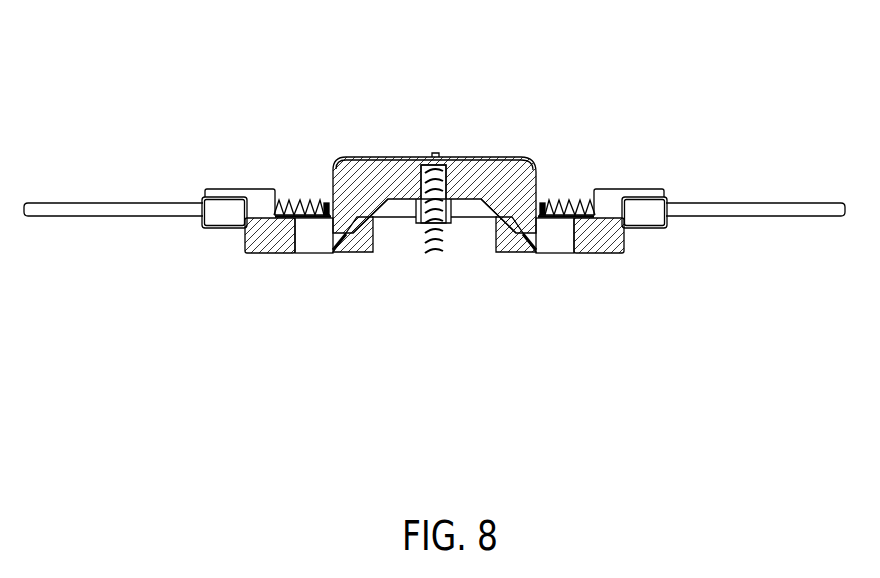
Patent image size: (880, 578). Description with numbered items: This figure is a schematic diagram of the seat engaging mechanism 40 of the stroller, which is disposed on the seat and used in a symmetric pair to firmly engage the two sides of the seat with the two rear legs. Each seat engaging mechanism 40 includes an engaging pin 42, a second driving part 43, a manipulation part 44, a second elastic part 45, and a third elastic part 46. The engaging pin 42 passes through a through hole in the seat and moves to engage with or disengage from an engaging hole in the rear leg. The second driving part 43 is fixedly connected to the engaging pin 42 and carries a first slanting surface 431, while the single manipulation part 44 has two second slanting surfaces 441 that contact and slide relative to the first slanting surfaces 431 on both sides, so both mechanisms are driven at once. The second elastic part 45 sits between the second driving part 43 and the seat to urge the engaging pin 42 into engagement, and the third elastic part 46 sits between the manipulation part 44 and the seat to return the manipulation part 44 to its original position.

The seat engaging mechanism 40 is at (170, 45).
The engaging pin 42 is at (130, 210).
The second driving part 43 is at (260, 200).
The manipulation part 44 is at (480, 173).
The second elastic part 45 is at (300, 203).
The third elastic part 46 is at (442, 252).
The first slanting surface 431 is at (339, 242).
The second slanting surface 441 is at (377, 210).